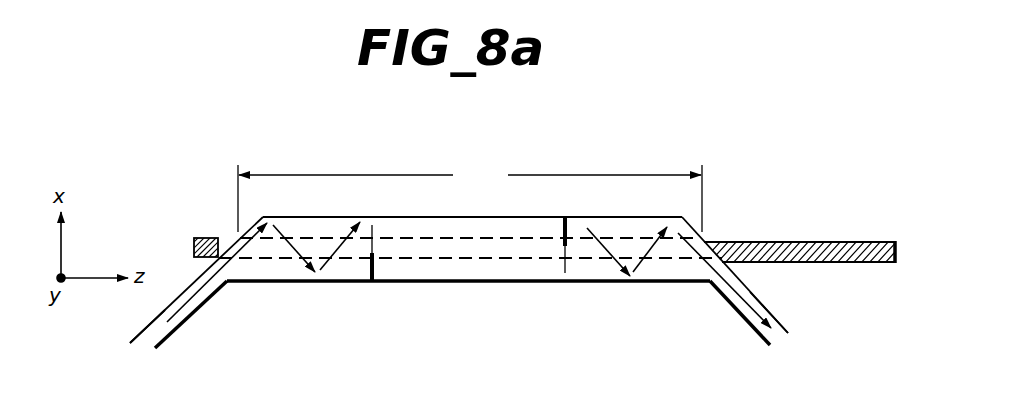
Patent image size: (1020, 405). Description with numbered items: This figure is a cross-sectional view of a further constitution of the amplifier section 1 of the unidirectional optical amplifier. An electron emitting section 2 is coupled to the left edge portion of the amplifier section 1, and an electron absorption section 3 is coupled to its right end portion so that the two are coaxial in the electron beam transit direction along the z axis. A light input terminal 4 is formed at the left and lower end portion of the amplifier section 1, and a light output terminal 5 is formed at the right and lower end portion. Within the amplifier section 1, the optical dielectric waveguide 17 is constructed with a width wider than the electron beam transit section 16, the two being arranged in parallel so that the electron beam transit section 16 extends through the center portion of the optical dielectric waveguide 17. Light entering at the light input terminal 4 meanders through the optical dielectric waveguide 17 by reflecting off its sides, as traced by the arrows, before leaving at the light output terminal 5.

The amplifier section 1 is at (470, 197).
The electron emitting section 2 is at (200, 237).
The electron absorption section 3 is at (795, 241).
The light input terminal 4 is at (157, 336).
The light output terminal 5 is at (778, 328).
The electron beam transit section 16 is at (436, 259).
The optical dielectric waveguide 17 is at (506, 275).